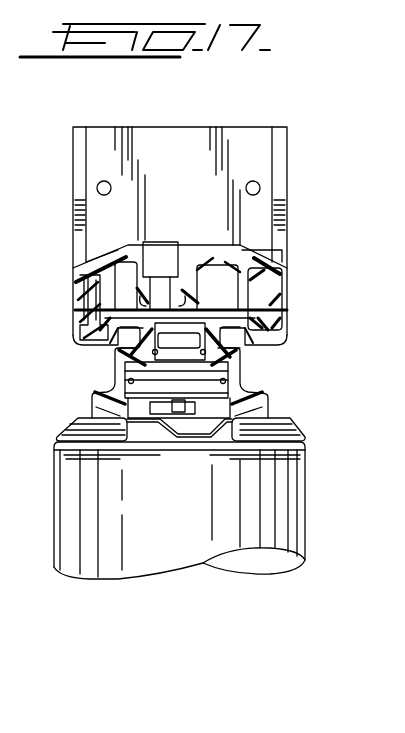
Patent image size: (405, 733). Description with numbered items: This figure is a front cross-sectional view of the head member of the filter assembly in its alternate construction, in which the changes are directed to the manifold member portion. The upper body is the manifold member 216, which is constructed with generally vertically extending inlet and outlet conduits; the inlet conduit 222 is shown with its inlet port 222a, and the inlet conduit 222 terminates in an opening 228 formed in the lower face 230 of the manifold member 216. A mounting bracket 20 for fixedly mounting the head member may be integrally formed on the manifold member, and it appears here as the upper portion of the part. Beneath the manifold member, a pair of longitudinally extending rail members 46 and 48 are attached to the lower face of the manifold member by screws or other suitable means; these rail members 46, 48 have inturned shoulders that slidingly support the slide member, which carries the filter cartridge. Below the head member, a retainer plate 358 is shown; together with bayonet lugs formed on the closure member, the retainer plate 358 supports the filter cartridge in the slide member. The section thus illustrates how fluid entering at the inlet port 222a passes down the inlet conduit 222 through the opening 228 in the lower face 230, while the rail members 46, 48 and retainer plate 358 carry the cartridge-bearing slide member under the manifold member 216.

The mounting bracket 20 is at (283, 152).
The rail member 46 is at (72, 337).
The rail member 48 is at (292, 328).
The manifold member 216 is at (288, 292).
The inlet conduit 222 is at (162, 300).
The inlet port 222a is at (146, 306).
The opening 228 is at (175, 280).
The lower face 230 is at (197, 316).
The retainer plate 358 is at (290, 420).